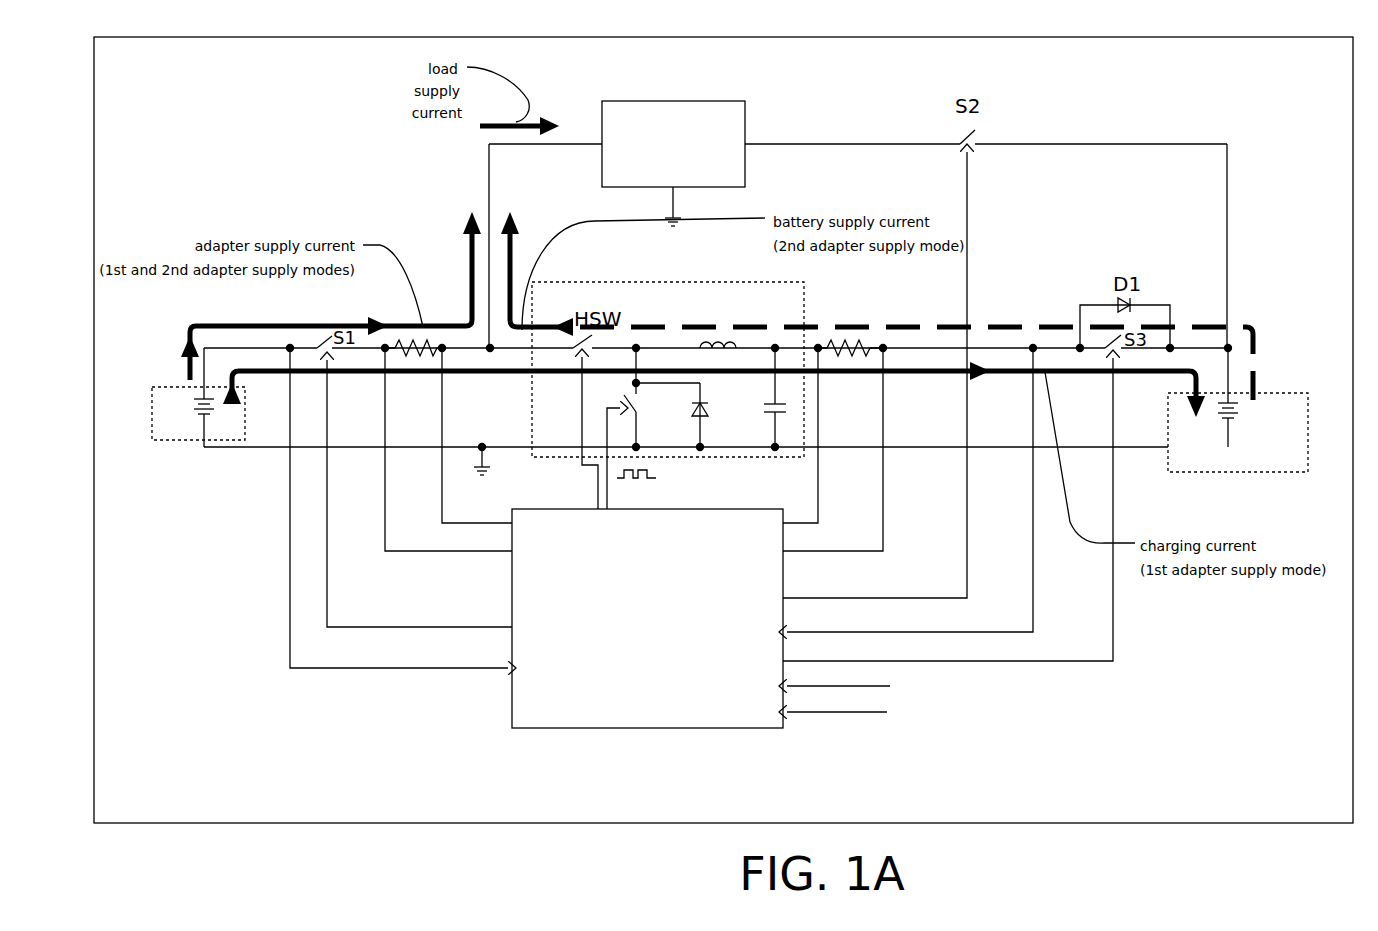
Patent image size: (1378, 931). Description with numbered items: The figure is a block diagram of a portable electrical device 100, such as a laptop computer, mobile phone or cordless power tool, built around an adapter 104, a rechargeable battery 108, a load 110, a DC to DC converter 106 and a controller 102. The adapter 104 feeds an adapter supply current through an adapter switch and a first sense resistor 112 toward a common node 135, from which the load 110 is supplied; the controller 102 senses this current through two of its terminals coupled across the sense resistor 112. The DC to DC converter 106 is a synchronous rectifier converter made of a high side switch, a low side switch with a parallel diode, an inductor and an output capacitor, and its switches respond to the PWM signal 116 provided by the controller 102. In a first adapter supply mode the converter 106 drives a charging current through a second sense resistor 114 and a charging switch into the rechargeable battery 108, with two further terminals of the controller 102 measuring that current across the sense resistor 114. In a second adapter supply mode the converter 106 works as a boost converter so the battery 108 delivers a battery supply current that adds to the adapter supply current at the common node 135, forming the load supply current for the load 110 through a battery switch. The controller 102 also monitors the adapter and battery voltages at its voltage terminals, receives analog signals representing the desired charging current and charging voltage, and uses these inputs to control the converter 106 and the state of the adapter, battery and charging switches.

The portable electrical device 100 is at (182, 136).
The controller 102 is at (562, 728).
The adapter 104 is at (190, 440).
The DC to DC converter 106 is at (805, 303).
The rechargeable battery 108 is at (1290, 393).
The load 110 is at (738, 101).
The sense resistor 112 is at (403, 353).
The sense resistor 114 is at (828, 353).
The PWM signal 116 is at (635, 480).
The common node 135 is at (489, 352).